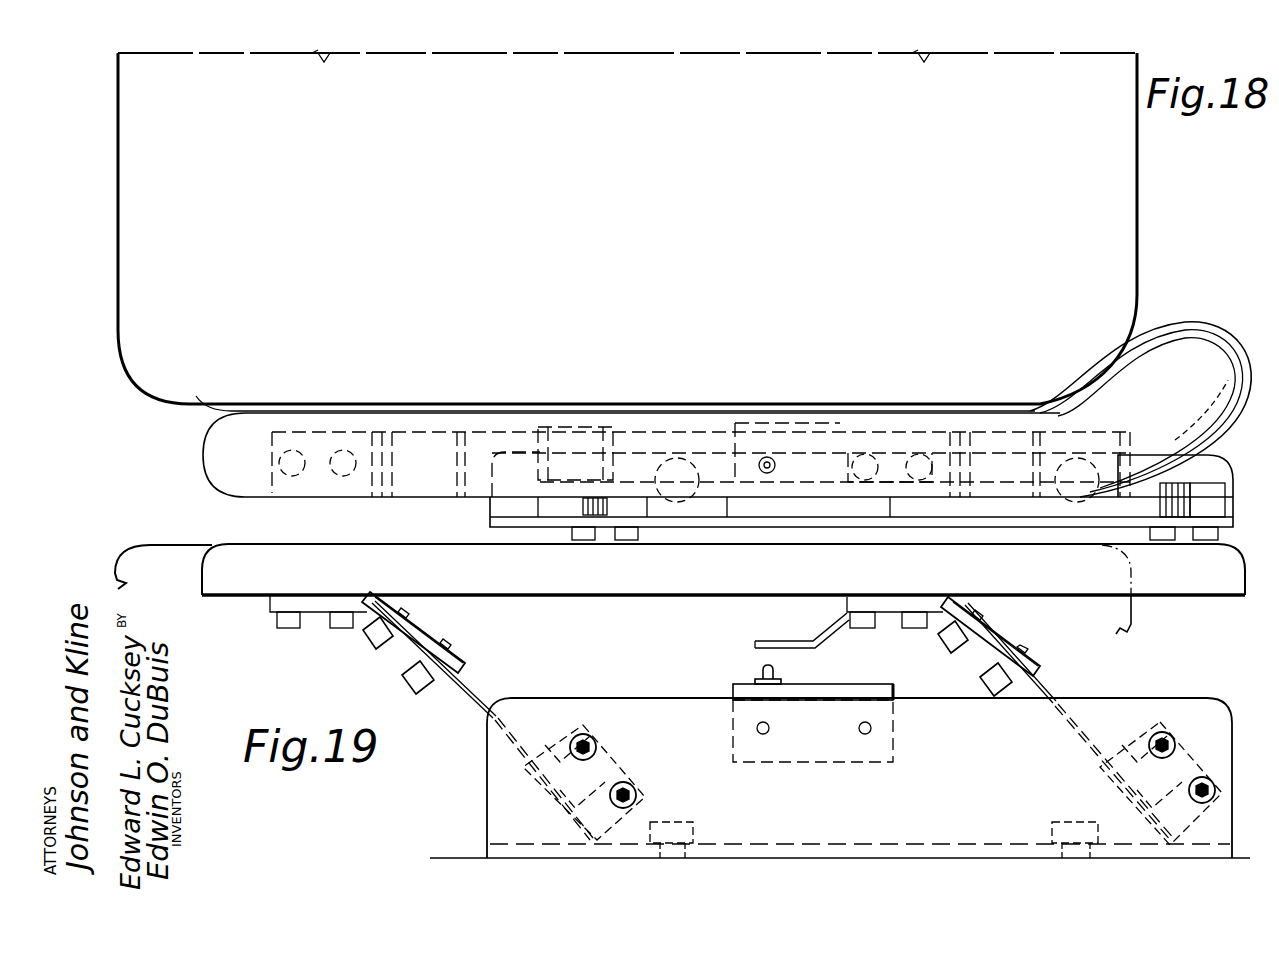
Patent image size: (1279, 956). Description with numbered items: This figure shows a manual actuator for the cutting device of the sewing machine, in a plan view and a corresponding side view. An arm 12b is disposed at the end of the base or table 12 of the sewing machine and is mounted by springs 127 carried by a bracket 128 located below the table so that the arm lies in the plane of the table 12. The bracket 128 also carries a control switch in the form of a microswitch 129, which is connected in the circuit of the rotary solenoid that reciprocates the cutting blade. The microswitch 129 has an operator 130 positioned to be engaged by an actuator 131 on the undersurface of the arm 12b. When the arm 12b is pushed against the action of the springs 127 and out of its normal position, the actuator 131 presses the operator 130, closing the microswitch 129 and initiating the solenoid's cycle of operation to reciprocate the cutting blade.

In FIG. 18, the base or table 12 is at (1097, 242).
In FIG. 18, the arm 12b is at (1180, 336).
In FIG. 19, the arm 12b is at (1172, 587).
In FIG. 19, the springs 127 is at (478, 699).
In FIG. 19, the bracket 128 is at (632, 714).
In FIG. 18, the microswitch 129 is at (793, 483).
In FIG. 19, the microswitch 129 is at (886, 678).
In FIG. 18, the operator 130 is at (760, 465).
In FIG. 19, the operator 130 is at (760, 669).
In FIG. 19, the actuator 131 is at (798, 627).